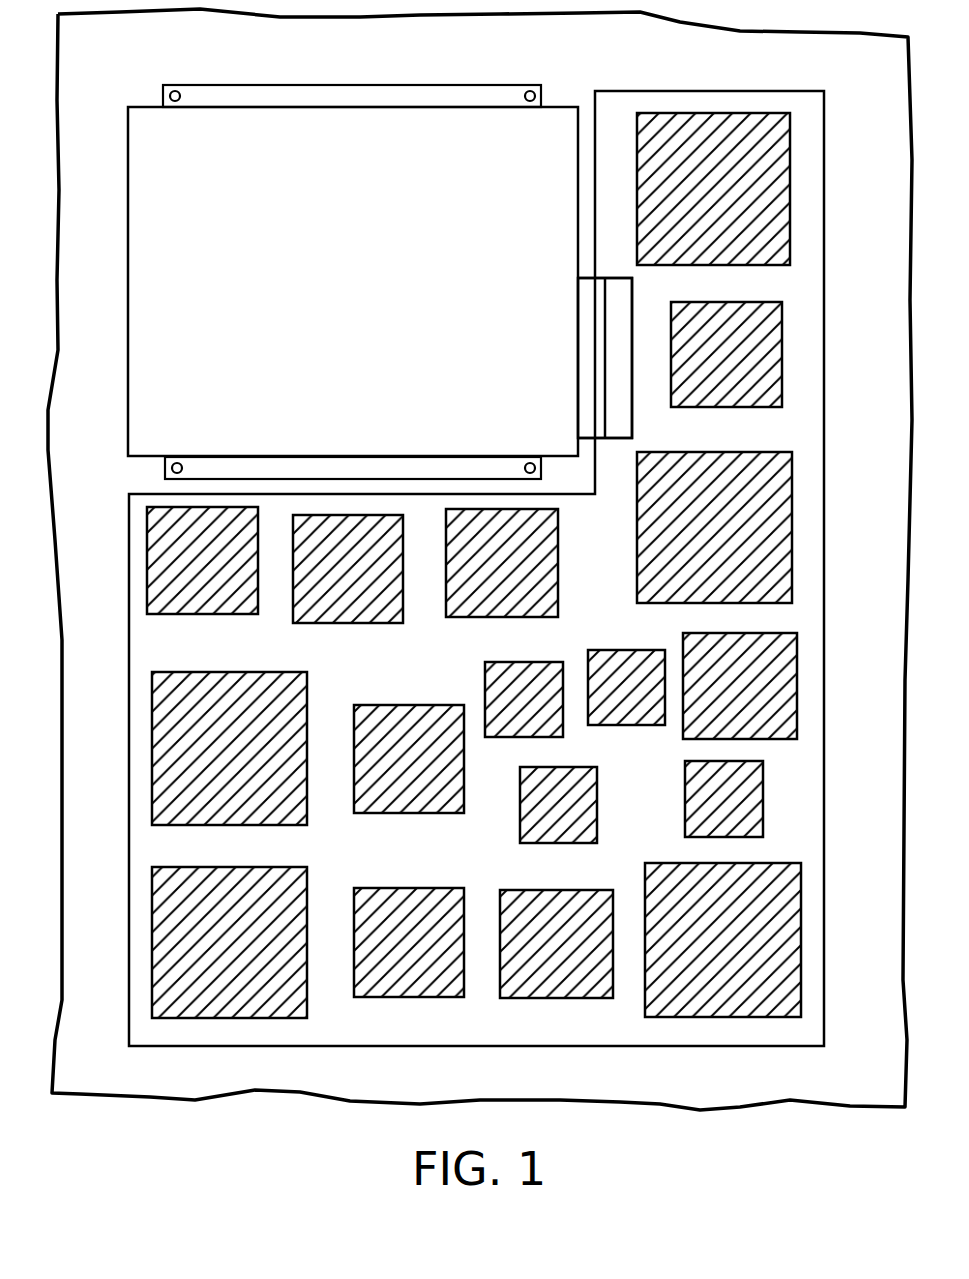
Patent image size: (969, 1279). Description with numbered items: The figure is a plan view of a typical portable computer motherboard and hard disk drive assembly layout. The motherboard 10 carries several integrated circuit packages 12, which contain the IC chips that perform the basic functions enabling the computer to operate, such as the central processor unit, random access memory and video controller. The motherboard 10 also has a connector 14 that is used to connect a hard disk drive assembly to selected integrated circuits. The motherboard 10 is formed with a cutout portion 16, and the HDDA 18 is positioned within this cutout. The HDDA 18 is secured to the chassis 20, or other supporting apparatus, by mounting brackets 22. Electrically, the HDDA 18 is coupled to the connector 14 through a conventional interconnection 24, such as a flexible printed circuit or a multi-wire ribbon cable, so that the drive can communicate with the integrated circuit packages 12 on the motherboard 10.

The motherboard 10 is at (790, 433).
The integrated circuit packages 12 is at (787, 673).
The connector 14 is at (617, 290).
The cutout portion 16 is at (122, 473).
The HDDA 18 is at (384, 295).
The chassis 20 is at (141, 68).
The mounting brackets 22 is at (229, 90).
The interconnection 24 is at (590, 312).